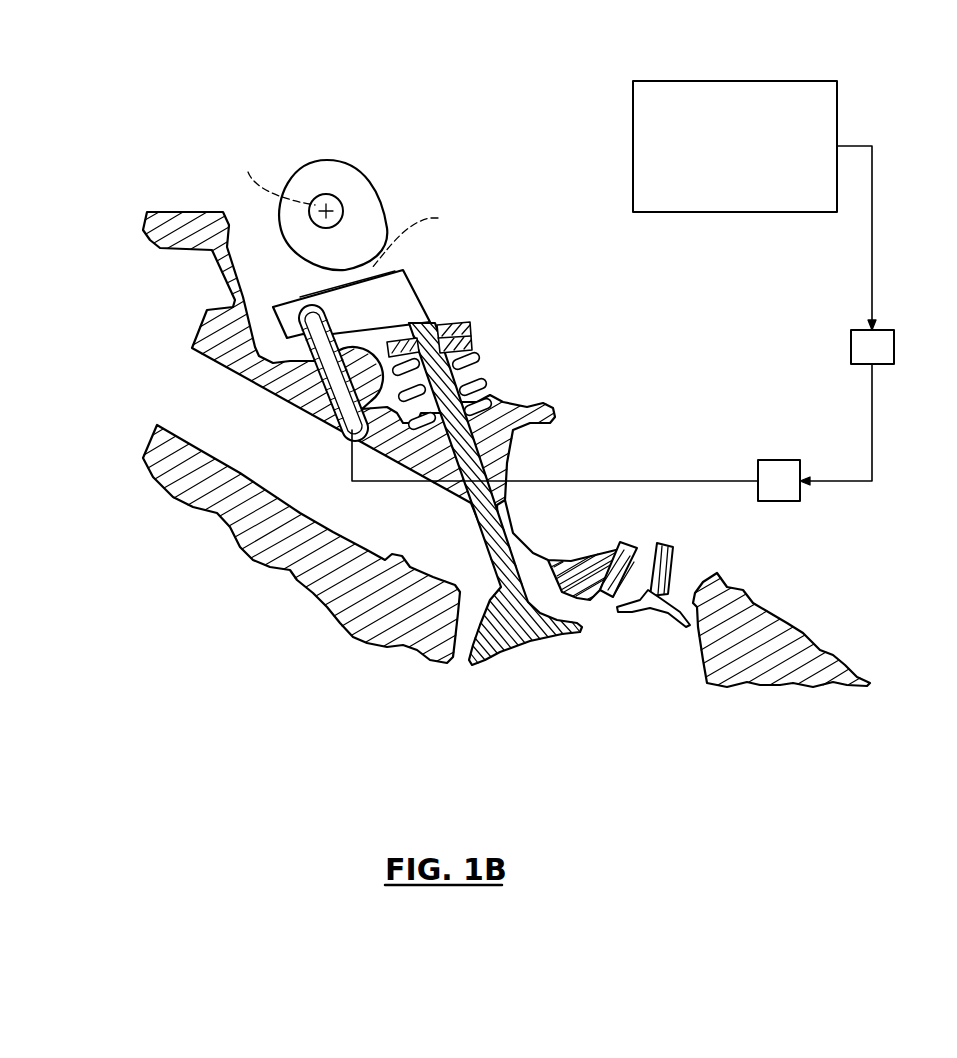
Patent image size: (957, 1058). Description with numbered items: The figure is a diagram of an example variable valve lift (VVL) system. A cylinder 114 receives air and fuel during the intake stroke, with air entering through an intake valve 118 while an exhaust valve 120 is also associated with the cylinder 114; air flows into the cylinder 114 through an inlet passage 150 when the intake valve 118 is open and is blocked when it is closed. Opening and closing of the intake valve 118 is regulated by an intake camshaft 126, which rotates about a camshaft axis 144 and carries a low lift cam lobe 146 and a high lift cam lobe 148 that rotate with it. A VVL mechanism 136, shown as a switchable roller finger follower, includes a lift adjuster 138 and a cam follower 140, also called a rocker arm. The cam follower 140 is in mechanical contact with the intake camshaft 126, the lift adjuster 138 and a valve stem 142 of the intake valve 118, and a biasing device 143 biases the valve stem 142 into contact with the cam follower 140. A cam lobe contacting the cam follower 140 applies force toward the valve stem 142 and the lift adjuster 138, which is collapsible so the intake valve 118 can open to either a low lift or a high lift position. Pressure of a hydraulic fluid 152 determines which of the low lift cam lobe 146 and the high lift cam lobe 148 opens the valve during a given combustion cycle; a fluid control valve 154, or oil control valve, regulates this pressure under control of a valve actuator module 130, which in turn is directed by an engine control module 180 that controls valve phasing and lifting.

The cylinder 114 is at (700, 658).
The intake valve 118 is at (520, 575).
The exhaust valve 120 is at (680, 562).
The intake camshaft 126 is at (328, 200).
The valve actuator module 130 is at (894, 348).
The variable valve lift mechanism 136 is at (480, 236).
The lift adjuster 138 is at (305, 391).
The cam follower 140 is at (402, 268).
The valve stem 142 is at (440, 322).
The biasing device 143 is at (480, 358).
The camshaft axis 144 is at (274, 176).
The low lift cam lobe 146 is at (375, 192).
The high lift cam lobe 148 is at (423, 239).
The inlet passage 150 is at (390, 560).
The hydraulic fluid 152 is at (683, 481).
The fluid control valve 154 is at (797, 500).
The engine control module 180 is at (728, 81).